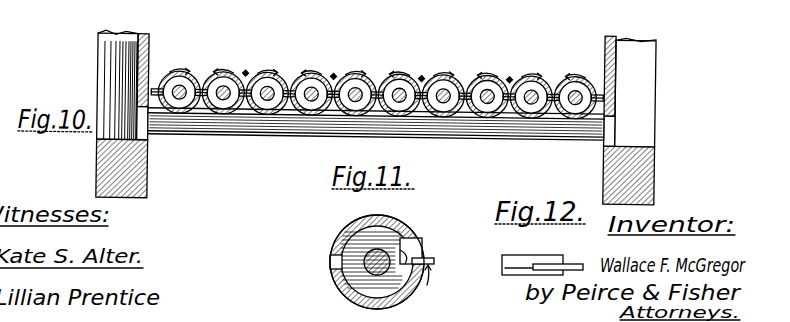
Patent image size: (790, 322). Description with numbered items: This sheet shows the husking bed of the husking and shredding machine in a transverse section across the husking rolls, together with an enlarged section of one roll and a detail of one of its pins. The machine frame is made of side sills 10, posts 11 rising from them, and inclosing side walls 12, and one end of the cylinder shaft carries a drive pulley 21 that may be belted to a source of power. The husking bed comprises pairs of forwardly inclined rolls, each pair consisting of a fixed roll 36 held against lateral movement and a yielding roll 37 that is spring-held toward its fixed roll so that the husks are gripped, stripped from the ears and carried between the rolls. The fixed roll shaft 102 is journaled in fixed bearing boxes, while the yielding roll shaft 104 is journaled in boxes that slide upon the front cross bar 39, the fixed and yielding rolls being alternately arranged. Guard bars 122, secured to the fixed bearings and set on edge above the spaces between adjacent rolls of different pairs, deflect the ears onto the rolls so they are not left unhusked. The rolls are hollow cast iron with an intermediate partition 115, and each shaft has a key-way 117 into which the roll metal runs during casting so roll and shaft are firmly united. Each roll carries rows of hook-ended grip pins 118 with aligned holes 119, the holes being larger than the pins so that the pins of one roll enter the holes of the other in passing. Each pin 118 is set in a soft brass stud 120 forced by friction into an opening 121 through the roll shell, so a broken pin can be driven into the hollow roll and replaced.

In FIG. 10, the side sill 10 is at (128, 174).
In FIG. 10, the post 11 is at (112, 117).
In FIG. 10, the side wall 12 is at (137, 59).
In FIG. 10, the drive pulley 21 is at (145, 131).
In FIG. 10, the fixed husking roll 36 is at (397, 66).
In FIG. 11, the fixed husking roll 36 is at (347, 286).
In FIG. 10, the yielding husking roll 37 is at (277, 115).
In FIG. 10, the front cross bar 39 is at (515, 133).
In FIG. 10, the fixed roll shaft 102 is at (224, 94).
In FIG. 11, the fixed roll shaft 102 is at (367, 266).
In FIG. 10, the yielding roll shaft 104 is at (178, 92).
In FIG. 11, the intermediate partition 115 is at (357, 229).
In FIG. 11, the key-way 117 is at (400, 252).
In FIG. 10, the grip pin 118 is at (480, 112).
In FIG. 12, the grip pin 118 is at (568, 266).
In FIG. 10, the hole 119 is at (272, 93).
In FIG. 11, the hole 119 is at (330, 261).
In FIG. 12, the brass stud 120 is at (500, 280).
In FIG. 11, the opening 121 is at (415, 258).
In FIG. 10, the guard bar 122 is at (333, 74).